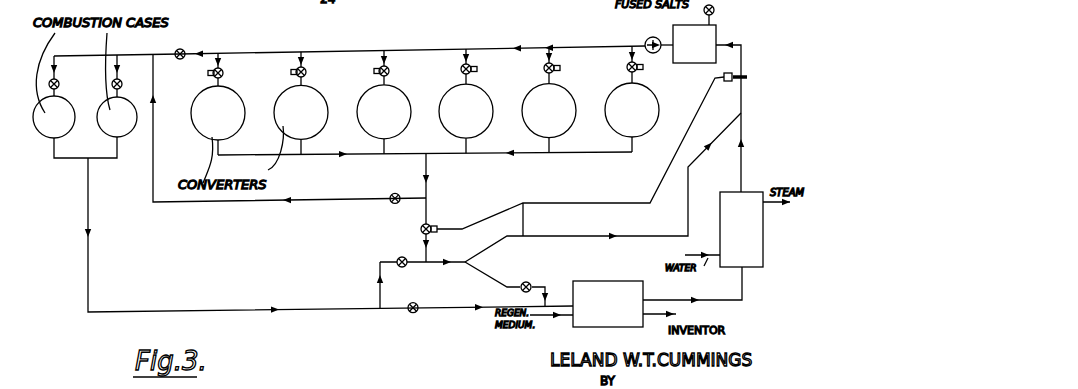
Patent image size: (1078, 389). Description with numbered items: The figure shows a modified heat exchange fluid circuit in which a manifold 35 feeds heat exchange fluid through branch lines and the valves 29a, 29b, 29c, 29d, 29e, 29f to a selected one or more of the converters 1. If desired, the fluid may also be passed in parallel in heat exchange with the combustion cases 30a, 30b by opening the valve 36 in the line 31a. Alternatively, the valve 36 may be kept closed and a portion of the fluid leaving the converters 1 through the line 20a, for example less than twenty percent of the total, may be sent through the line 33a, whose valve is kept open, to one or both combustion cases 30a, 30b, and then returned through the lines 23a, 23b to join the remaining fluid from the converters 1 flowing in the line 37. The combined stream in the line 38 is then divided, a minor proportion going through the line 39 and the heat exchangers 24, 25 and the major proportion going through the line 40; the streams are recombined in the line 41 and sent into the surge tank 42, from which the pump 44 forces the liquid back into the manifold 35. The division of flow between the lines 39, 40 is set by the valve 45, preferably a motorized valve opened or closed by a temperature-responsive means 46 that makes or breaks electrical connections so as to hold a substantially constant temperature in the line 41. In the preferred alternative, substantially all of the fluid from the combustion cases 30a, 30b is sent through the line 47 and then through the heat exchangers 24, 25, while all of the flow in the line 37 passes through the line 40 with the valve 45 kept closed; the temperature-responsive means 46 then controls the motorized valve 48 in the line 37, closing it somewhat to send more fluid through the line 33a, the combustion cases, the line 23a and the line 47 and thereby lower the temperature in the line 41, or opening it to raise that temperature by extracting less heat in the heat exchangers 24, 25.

The converters 1 is at (233, 129).
The line 20a is at (426, 168).
The line 23a is at (234, 311).
The line 23b is at (375, 263).
The heat exchanger 24 is at (573, 326).
The heat exchanger 25 is at (765, 251).
The valve 29a is at (224, 73).
The valve 29b is at (307, 72).
The valve 29c is at (390, 71).
The valve 29d is at (478, 69).
The valve 29e is at (561, 68).
The valve 29f is at (643, 67).
The combustion case 30a is at (118, 137).
The combustion case 30b is at (62, 97).
The line 31a is at (128, 55).
The line 33a is at (156, 172).
The manifold 35 is at (437, 50).
The valve 36 is at (181, 49).
The line 37 is at (430, 217).
The line 38 is at (470, 257).
The line 39 is at (480, 279).
The line 40 is at (582, 235).
The line 41 is at (743, 103).
The surge tank 42 is at (718, 36).
The pump 44 is at (664, 26).
The valve 45 is at (522, 280).
The temperature-responsive means 46 is at (730, 82).
The line 47 is at (461, 311).
The valve 48 is at (420, 229).